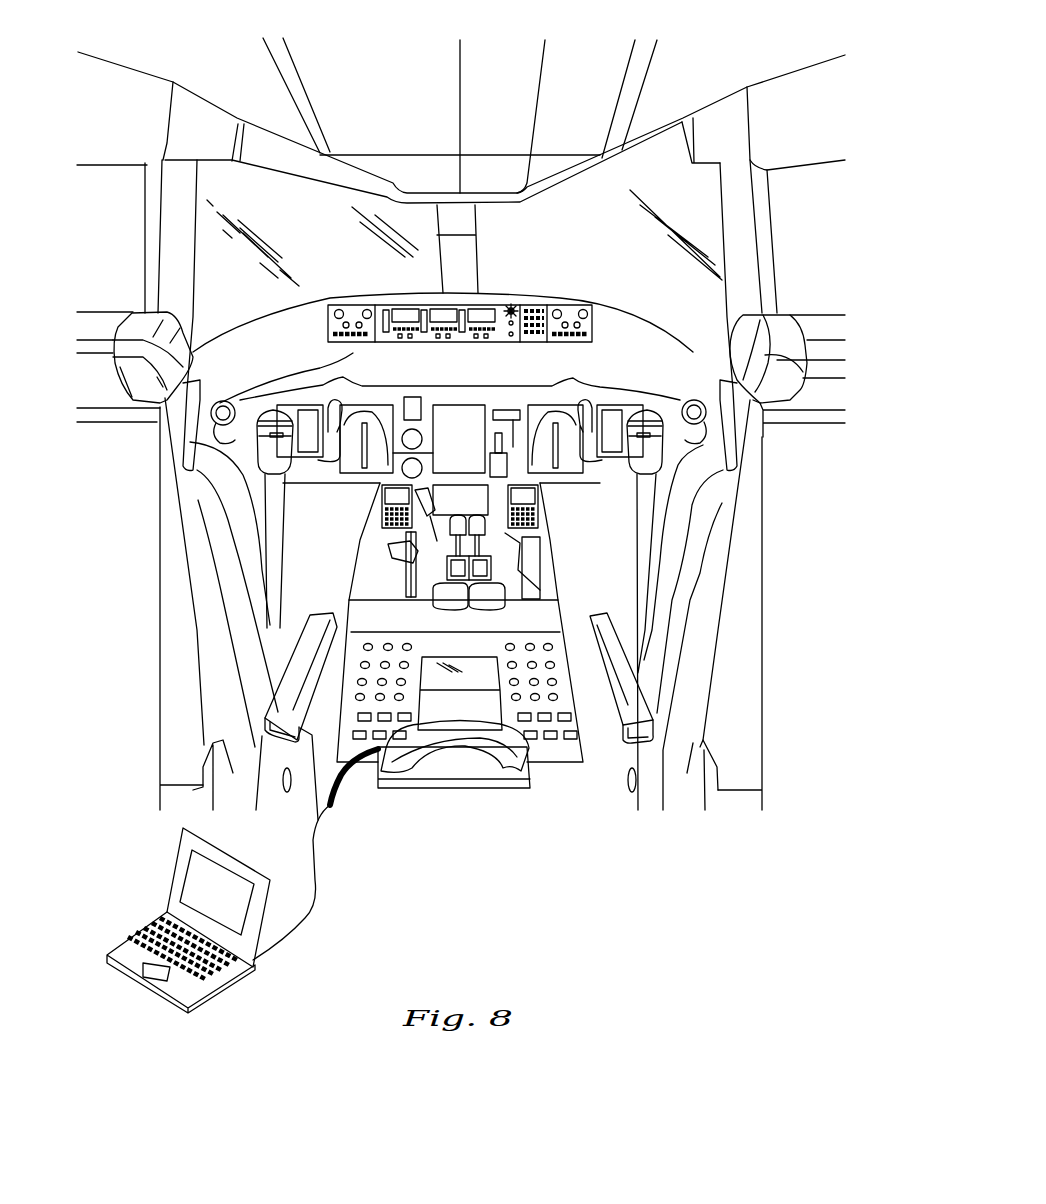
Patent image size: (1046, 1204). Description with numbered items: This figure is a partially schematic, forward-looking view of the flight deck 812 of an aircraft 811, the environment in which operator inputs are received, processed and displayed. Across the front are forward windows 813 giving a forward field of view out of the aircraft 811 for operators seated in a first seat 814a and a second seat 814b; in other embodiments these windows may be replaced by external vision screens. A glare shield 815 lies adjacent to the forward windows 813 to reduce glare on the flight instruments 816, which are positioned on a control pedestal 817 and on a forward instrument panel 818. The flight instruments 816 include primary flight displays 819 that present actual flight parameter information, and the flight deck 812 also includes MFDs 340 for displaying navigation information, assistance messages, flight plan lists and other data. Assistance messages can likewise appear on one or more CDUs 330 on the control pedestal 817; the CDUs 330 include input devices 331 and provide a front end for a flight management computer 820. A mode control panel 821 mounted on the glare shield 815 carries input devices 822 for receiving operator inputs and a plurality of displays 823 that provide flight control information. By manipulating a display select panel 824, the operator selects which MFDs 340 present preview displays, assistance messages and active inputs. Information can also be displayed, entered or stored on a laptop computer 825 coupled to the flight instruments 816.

The aircraft 811 is at (805, 66).
The flight deck 812 is at (793, 777).
The forward windows 813 is at (330, 237).
The first seat 814a is at (113, 350).
The second seat 814b is at (812, 390).
The glare shield 815 is at (576, 356).
The flight instruments 816 is at (578, 355).
The control pedestal 817 is at (563, 752).
The forward instrument panel 818 is at (560, 383).
The primary flight displays 819 is at (313, 410).
The flight management computer 820 is at (363, 516).
The mode control panel 821 is at (354, 225).
The input devices 822 is at (415, 303).
The displays 823 is at (493, 300).
The display select panel 824 is at (535, 305).
The laptop computer 825 is at (143, 925).
The CDUs 330 is at (373, 489).
The input devices 331 is at (378, 528).
The MFDs 340 is at (512, 536).